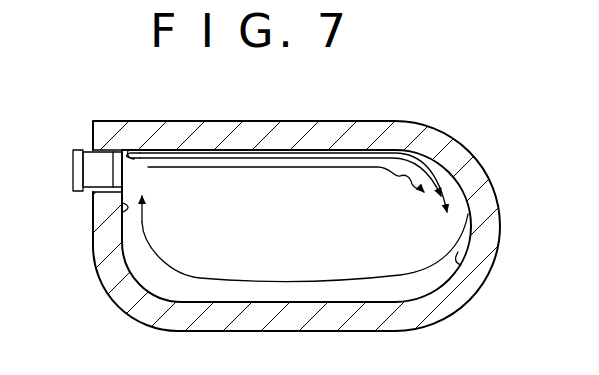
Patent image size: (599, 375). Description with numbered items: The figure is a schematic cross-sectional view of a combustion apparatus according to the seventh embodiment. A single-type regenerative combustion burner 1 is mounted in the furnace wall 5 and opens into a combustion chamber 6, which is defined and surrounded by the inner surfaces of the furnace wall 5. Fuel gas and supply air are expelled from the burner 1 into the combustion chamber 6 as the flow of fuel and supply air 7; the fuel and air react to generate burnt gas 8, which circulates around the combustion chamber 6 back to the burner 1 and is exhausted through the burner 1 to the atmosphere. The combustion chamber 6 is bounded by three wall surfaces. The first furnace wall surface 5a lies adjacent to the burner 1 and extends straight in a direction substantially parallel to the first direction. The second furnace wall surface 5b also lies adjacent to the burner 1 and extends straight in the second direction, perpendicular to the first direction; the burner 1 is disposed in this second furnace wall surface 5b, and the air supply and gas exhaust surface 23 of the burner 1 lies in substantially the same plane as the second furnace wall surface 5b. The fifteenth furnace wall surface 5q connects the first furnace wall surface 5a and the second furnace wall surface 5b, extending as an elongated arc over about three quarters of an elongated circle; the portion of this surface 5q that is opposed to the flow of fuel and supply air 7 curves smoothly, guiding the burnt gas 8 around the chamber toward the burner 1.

The single-type regenerative combustion burner 1 is at (95, 163).
The air supply and gas exhaust surface 23 is at (124, 172).
The furnace wall 5 is at (490, 243).
The first furnace wall surface 5a is at (129, 151).
The second furnace wall surface 5b is at (124, 207).
The fifteenth furnace wall surface 5q is at (463, 264).
The combustion chamber 6 is at (478, 232).
The flow of the fuel and supply air 7 is at (158, 159).
The burnt gas 8 is at (140, 222).